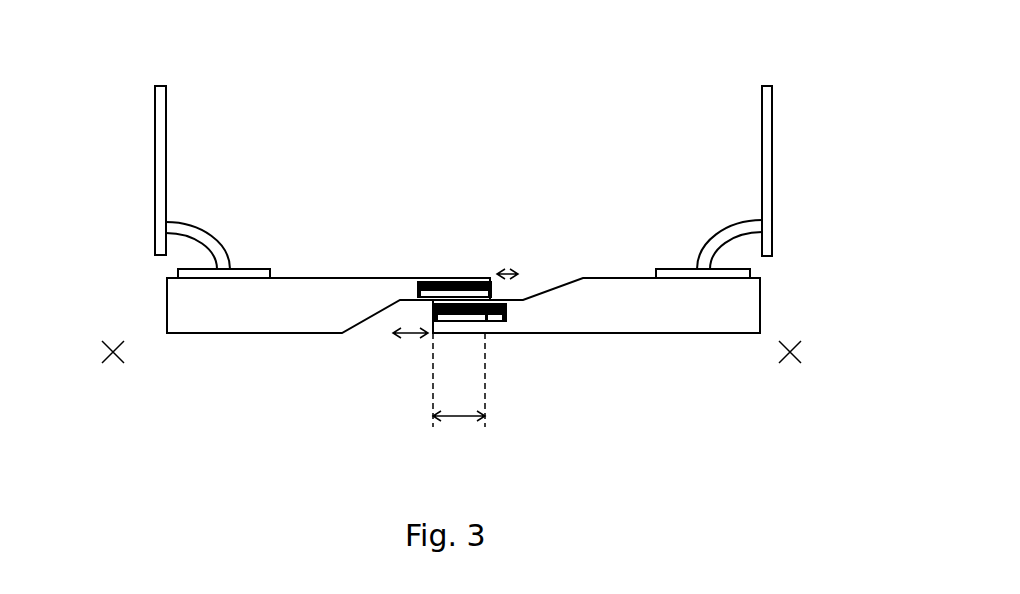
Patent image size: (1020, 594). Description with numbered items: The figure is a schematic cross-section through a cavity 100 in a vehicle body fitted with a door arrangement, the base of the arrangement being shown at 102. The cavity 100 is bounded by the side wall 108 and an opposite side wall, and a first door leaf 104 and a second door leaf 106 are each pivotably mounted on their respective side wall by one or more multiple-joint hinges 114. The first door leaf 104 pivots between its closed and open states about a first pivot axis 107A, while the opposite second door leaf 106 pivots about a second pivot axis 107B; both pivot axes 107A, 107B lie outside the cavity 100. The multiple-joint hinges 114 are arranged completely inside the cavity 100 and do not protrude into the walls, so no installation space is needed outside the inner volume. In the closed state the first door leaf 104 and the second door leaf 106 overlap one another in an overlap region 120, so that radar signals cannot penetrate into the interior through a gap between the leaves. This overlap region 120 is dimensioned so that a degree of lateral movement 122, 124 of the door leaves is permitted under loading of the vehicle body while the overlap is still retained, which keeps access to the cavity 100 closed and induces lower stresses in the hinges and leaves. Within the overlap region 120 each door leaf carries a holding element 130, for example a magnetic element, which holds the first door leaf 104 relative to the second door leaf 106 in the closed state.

The cavity 100 is at (522, 143).
The substrate / base 102 is at (637, 357).
The first door leaf 104 is at (328, 277).
The second door leaf 106 is at (617, 277).
The first pivot axis 107A is at (113, 363).
The second pivot axis 107B is at (790, 362).
The side wall 108 is at (158, 132).
The multiple-joint hinge 114 is at (193, 222).
The overlap region 120 is at (462, 418).
The lateral movement 122 is at (410, 338).
The lateral movement 124 is at (503, 272).
The holding element 130 is at (452, 280).